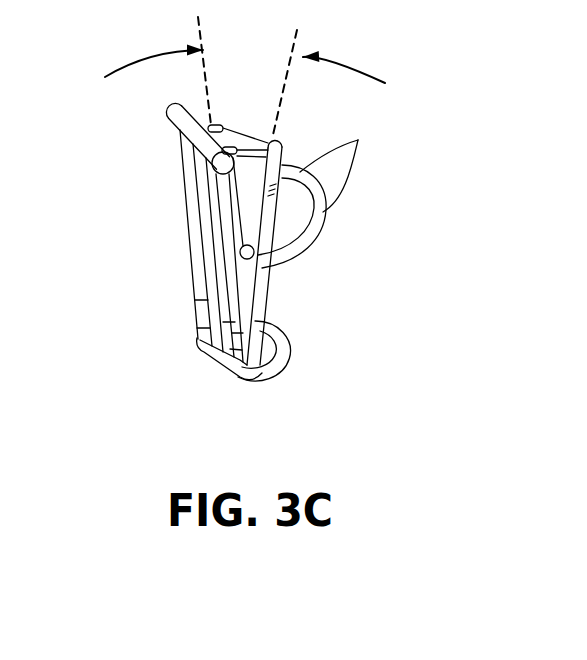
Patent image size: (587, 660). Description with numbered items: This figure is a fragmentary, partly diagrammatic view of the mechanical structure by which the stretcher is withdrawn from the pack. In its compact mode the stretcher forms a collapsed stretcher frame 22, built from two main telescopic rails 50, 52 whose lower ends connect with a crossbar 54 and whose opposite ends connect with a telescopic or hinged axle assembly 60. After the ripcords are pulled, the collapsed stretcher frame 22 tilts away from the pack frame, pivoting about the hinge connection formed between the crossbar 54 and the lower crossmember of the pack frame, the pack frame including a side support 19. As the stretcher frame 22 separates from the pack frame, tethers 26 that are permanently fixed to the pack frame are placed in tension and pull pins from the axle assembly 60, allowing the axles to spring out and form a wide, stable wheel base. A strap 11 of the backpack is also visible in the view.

The axle assembly 60 is at (190, 118).
The collapsed stretcher frame 22 is at (175, 192).
The main telescopic rail 50 is at (218, 255).
The main telescopic rail 52 is at (193, 272).
The crossbar 54 is at (218, 361).
The tether 26 is at (256, 242).
The side support 19 is at (265, 248).
The strap 11 is at (318, 250).